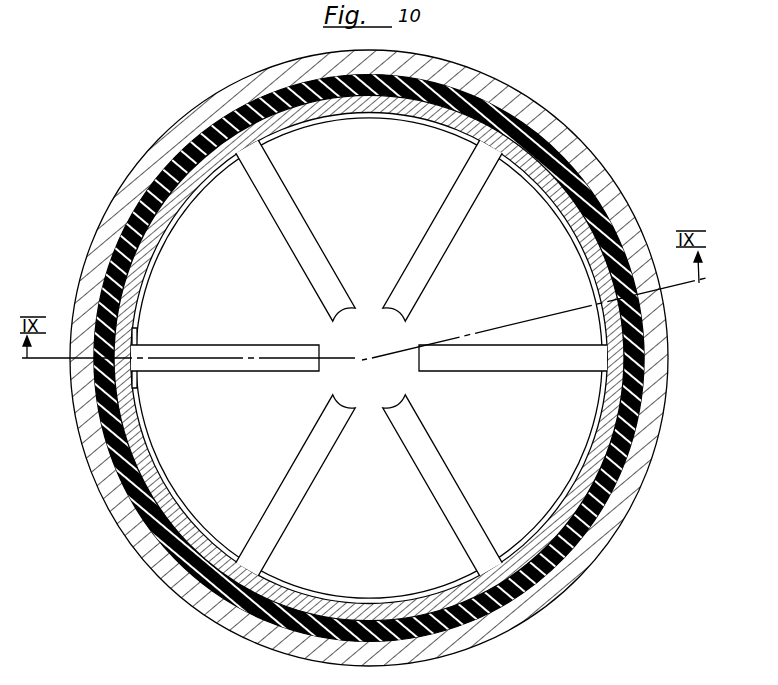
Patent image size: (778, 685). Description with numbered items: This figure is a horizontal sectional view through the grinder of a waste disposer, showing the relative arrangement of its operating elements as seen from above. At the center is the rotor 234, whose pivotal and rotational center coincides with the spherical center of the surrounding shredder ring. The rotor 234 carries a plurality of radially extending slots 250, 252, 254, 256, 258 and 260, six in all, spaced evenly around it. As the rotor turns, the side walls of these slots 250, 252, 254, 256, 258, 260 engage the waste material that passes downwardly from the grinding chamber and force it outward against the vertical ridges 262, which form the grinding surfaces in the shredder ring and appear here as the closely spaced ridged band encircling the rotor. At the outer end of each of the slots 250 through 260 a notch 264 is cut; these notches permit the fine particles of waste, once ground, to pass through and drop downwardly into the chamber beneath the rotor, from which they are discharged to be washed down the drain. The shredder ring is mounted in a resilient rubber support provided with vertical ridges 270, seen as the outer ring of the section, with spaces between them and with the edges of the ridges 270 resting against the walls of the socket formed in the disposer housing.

The rotor 234 is at (549, 572).
The slot 250 is at (310, 372).
The slot 252 is at (342, 283).
The slot 254 is at (422, 237).
The slot 256 is at (515, 372).
The slot 258 is at (431, 441).
The slot 260 is at (326, 462).
The vertical ridges 262 is at (381, 110).
The notch 264 is at (130, 348).
The vertical ridges 270 is at (620, 483).